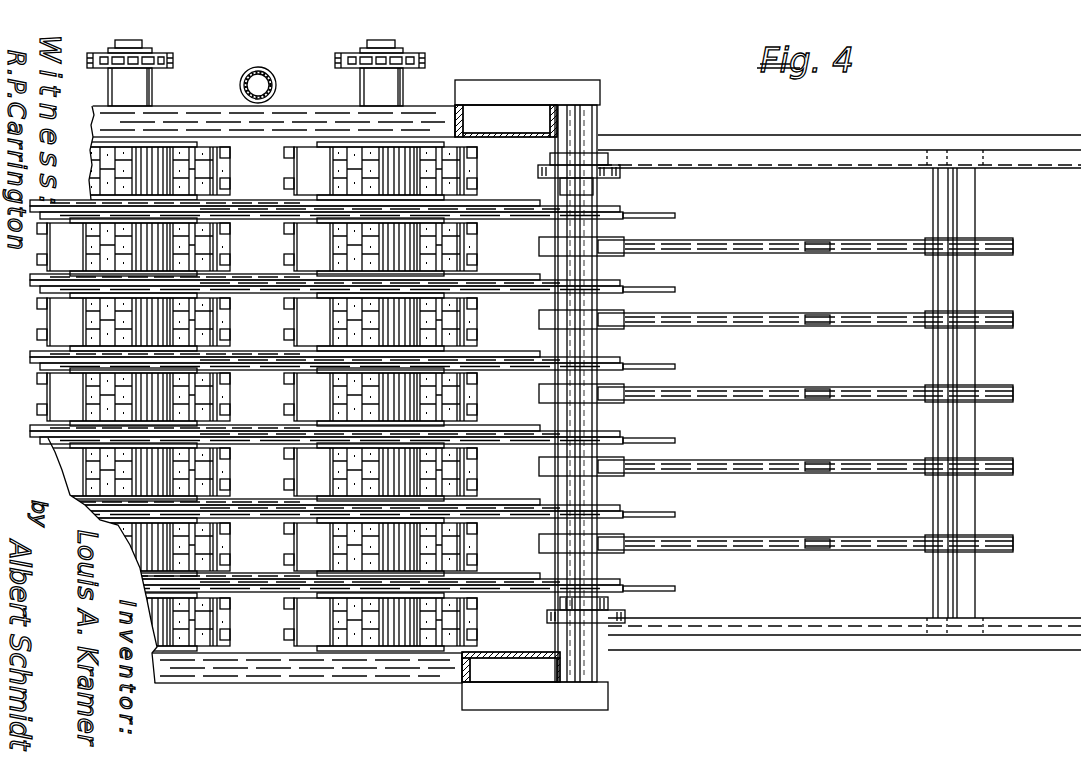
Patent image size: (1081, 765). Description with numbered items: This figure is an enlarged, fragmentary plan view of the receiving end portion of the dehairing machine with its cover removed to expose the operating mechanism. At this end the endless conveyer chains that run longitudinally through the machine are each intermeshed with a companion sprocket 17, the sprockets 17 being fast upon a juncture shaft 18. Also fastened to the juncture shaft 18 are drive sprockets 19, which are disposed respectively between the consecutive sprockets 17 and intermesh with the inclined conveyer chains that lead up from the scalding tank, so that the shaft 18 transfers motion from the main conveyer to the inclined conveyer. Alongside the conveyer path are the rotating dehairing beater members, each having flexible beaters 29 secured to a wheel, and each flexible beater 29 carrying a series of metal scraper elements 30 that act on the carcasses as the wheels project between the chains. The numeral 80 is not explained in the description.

The companion sprocket 17 is at (606, 233).
The juncture shaft 18 is at (553, 231).
The drive sprocket 19 is at (543, 249).
The flexible beater 29 is at (316, 464).
The metal scraper element 30 is at (478, 381).
The connecting rod 80 is at (883, 421).